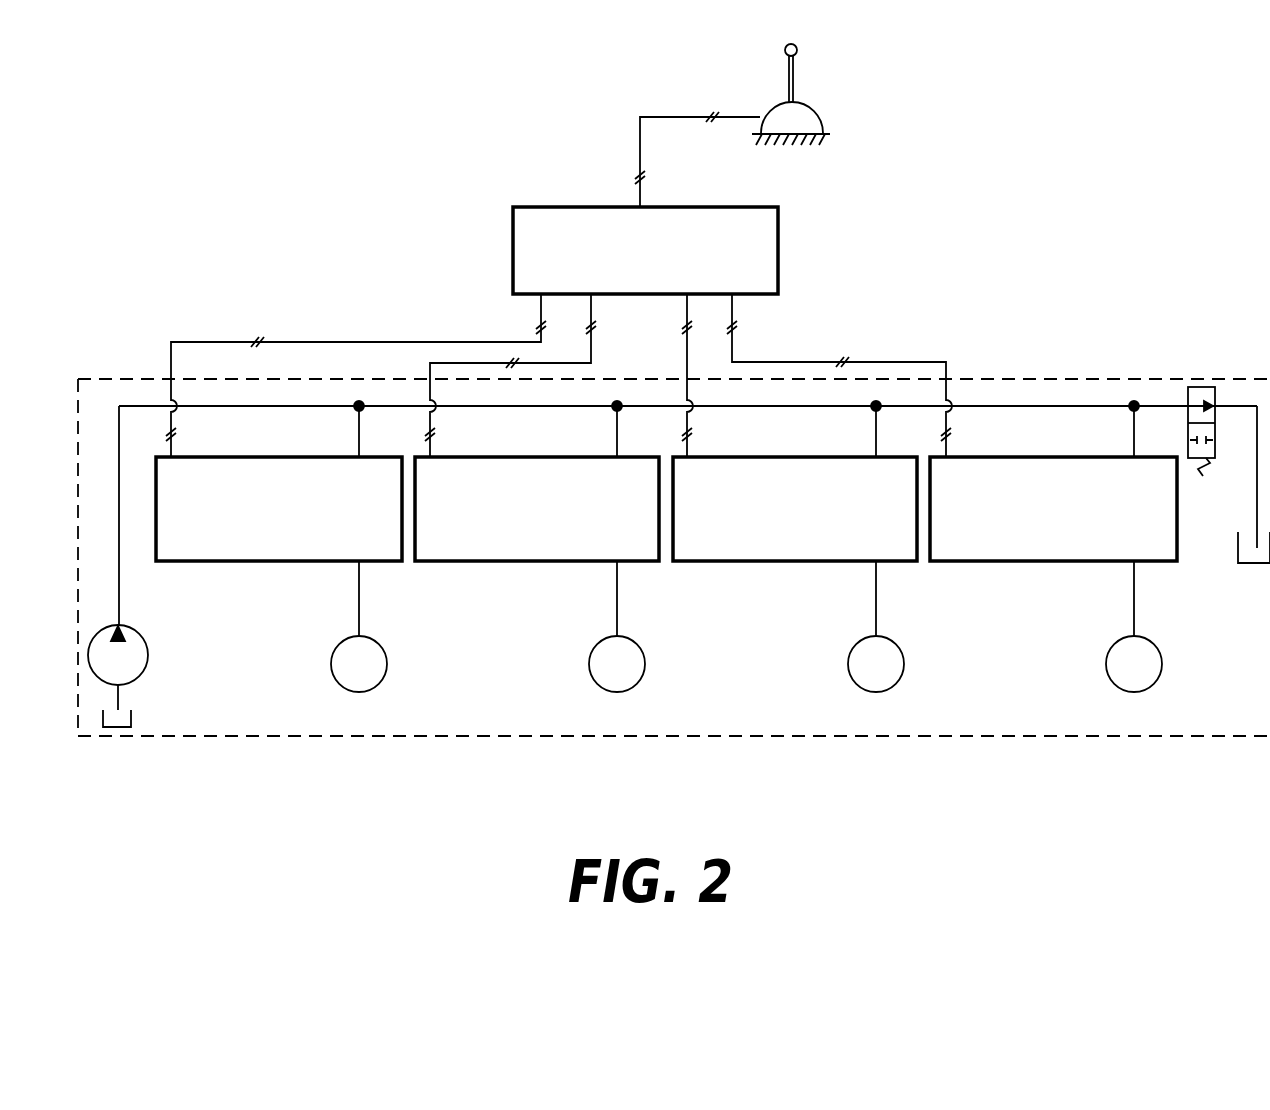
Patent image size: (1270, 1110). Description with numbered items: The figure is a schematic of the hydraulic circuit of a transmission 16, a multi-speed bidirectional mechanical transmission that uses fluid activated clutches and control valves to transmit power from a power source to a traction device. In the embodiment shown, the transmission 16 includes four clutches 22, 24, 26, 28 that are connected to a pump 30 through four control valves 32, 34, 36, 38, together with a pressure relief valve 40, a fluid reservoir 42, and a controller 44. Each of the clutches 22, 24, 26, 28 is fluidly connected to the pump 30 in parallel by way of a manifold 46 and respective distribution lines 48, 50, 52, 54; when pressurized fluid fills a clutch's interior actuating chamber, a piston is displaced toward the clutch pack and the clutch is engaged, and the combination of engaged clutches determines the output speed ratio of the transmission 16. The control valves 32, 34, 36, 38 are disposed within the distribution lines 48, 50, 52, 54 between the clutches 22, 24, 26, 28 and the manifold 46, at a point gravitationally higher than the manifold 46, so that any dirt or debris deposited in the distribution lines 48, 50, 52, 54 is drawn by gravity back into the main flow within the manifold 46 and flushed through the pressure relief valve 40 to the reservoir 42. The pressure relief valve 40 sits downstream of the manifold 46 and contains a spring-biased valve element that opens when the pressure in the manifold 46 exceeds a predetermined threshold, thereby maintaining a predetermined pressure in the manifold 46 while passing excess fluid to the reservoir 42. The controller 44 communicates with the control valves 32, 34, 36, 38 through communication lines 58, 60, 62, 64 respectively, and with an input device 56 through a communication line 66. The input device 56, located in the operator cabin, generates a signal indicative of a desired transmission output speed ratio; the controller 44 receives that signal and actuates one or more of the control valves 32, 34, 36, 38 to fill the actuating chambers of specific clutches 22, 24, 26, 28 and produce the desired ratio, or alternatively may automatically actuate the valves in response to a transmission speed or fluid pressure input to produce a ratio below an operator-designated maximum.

The transmission 16 is at (1113, 738).
The clutch 22 is at (387, 660).
The clutch 24 is at (645, 660).
The clutch 26 is at (904, 660).
The clutch 28 is at (1162, 657).
The pump 30 is at (148, 652).
The control valve 32 is at (279, 509).
The control valve 34 is at (537, 509).
The control valve 36 is at (795, 509).
The control valve 38 is at (1053, 509).
The pressure relief valve 40 is at (1215, 393).
The fluid reservoir 42 is at (131, 718).
The controller 44 is at (778, 245).
The manifold 46 is at (133, 406).
The distribution line 48 is at (359, 440).
The distribution line 50 is at (617, 440).
The distribution line 52 is at (876, 440).
The distribution line 54 is at (1134, 438).
The input device 56 is at (797, 50).
The communication line 58 is at (333, 342).
The communication line 60 is at (593, 306).
The communication line 62 is at (687, 346).
The communication line 64 is at (732, 352).
The communication line 66 is at (670, 117).